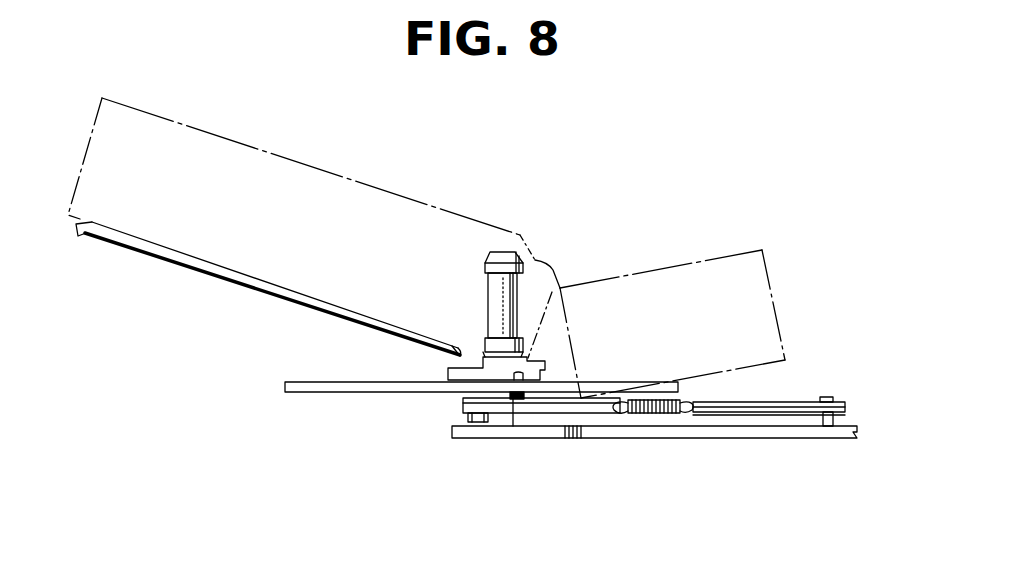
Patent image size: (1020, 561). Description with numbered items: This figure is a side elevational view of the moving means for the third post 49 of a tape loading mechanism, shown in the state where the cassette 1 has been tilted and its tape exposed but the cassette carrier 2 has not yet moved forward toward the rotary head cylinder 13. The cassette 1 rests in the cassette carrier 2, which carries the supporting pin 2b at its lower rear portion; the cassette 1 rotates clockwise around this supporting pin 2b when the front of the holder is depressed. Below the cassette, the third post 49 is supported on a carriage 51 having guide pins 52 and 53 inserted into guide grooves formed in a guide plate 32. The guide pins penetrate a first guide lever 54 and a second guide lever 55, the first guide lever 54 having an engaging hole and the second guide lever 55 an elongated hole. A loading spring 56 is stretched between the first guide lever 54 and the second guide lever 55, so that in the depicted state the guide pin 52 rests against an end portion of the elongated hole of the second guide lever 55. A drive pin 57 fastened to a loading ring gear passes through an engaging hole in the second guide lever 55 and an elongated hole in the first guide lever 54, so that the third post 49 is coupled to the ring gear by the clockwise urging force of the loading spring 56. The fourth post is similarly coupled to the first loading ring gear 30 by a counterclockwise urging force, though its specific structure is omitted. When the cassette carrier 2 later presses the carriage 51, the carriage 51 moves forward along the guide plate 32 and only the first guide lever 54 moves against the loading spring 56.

The cassette 1 is at (295, 162).
The cassette carrier 2 is at (236, 282).
The supporting pin 2b is at (452, 358).
The rotary head cylinder 13 is at (698, 262).
The first loading ring gear 30 is at (715, 438).
The guide plate 32 is at (316, 392).
The third post 49 is at (508, 290).
The carriage 51 is at (442, 378).
The guide pin 52 is at (478, 423).
The guide pin 53 is at (513, 395).
The first guide lever 54 is at (796, 401).
The second guide lever 55 is at (778, 416).
The loading spring 56 is at (655, 413).
The drive pin 57 is at (833, 428).